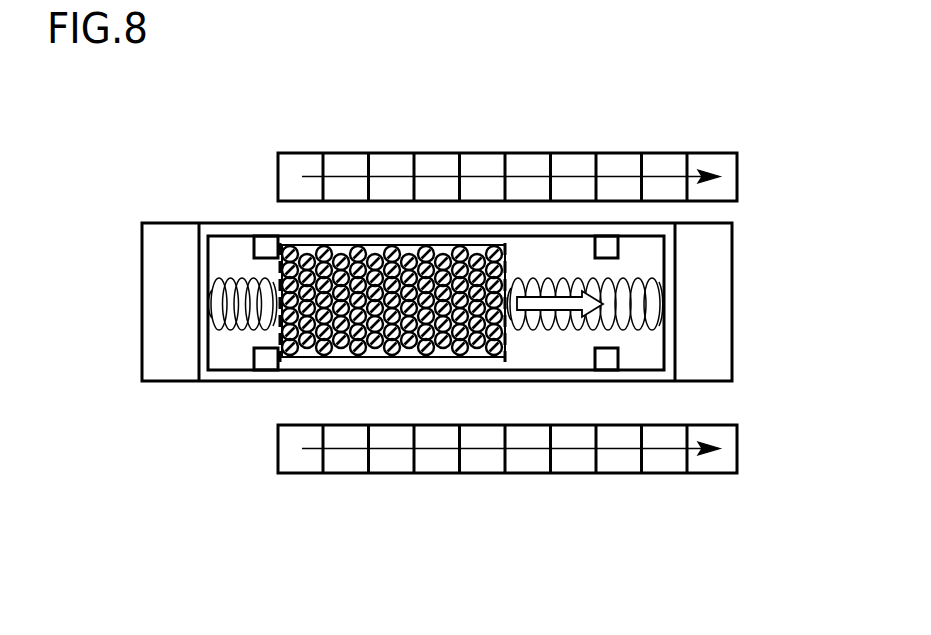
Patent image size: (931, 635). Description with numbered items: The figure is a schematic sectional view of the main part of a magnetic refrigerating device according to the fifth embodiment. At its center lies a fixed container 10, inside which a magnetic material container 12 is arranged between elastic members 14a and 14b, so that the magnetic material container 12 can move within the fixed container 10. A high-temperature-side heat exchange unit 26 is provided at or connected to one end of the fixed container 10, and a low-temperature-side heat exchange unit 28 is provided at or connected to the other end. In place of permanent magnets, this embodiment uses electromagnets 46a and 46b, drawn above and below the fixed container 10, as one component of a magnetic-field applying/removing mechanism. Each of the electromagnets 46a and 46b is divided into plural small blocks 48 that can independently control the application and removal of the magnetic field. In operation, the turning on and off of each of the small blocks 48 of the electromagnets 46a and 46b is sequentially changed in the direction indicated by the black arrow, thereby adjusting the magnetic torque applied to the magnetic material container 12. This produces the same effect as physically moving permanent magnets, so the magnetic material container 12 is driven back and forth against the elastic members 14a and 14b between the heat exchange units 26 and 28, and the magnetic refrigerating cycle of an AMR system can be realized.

The fixed container 10 is at (217, 232).
The magnetic material container 12 is at (289, 242).
The elastic member 14a is at (568, 315).
The elastic member 14b is at (228, 303).
The high-temperature-side heat exchange unit 26 is at (713, 302).
The low-temperature-side heat exchange unit 28 is at (153, 302).
The electromagnet 46a is at (507, 126).
The electromagnet 46b is at (497, 496).
The small block 48 is at (339, 162).